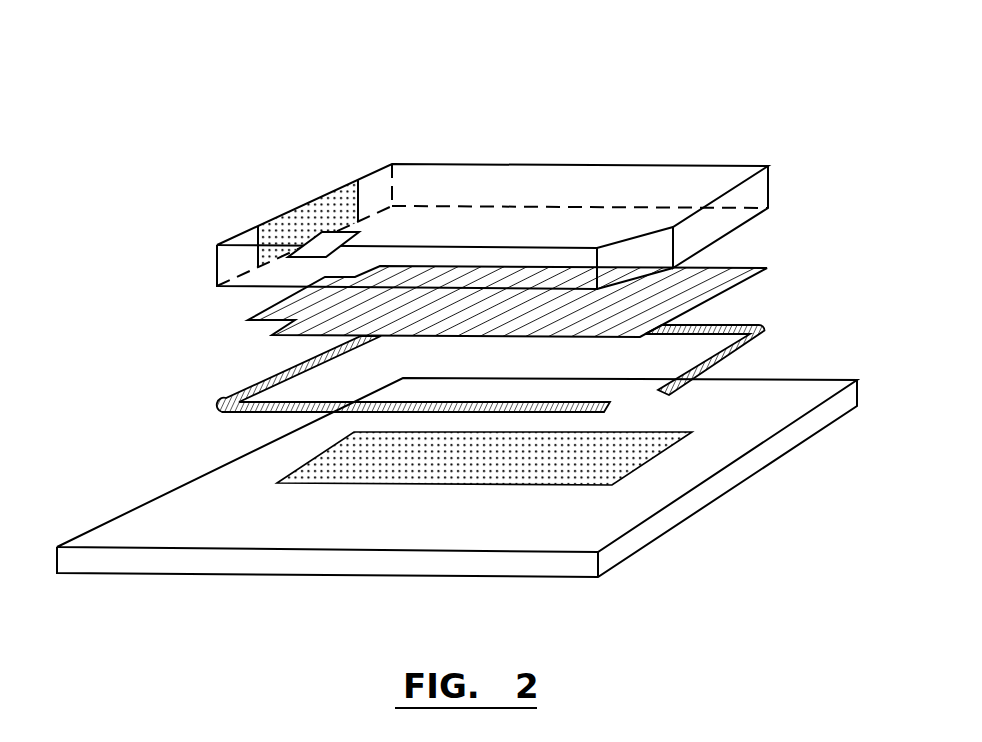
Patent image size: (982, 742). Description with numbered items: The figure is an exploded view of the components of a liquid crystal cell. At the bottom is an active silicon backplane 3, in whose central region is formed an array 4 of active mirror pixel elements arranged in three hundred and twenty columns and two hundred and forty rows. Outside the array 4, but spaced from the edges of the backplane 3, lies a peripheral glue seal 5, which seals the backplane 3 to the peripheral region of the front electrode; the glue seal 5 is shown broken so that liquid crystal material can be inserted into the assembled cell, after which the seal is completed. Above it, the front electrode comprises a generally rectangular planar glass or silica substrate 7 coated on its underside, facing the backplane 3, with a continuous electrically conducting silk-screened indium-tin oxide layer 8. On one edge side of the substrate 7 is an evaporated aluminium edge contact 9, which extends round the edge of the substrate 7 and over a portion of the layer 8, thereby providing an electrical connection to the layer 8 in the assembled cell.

The active silicon backplane 3 is at (208, 508).
The array of active mirror pixel elements 4 is at (627, 475).
The peripheral glue seal 5 is at (742, 323).
The substrate 7 is at (518, 185).
The indium-tin oxide layer 8 is at (245, 317).
The aluminium edge contact 9 is at (307, 213).